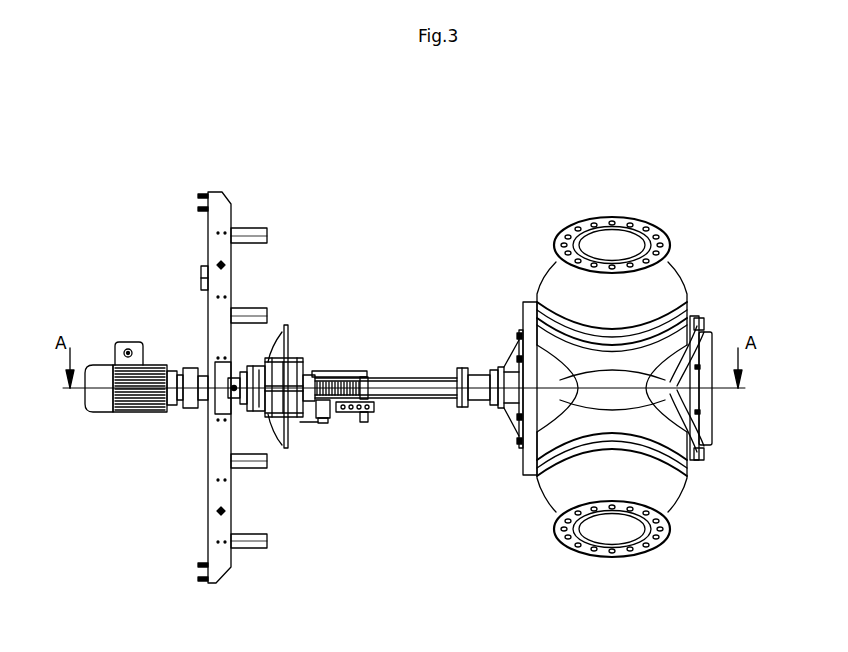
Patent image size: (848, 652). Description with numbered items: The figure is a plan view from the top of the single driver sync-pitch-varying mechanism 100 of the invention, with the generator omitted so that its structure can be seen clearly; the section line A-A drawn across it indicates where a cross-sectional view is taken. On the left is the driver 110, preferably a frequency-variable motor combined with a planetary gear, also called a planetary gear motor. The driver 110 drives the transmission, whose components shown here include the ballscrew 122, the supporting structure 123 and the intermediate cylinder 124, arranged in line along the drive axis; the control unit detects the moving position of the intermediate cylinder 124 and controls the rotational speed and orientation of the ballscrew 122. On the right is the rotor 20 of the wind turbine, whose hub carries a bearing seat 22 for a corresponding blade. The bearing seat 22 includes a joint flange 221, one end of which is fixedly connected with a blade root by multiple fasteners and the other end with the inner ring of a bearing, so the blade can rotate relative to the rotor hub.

The single driver sync-pitch-varying mechanism 100 is at (308, 155).
The driver 110 is at (103, 405).
The ballscrew 122 is at (350, 382).
The supporting structure 123 is at (285, 345).
The intermediate cylinder 124 is at (422, 382).
The rotor 20 is at (692, 158).
The bearing seat 22 is at (692, 509).
The joint flange 221 is at (668, 246).